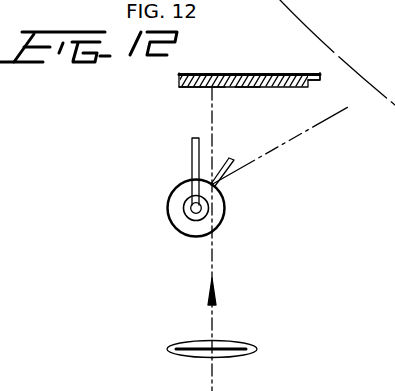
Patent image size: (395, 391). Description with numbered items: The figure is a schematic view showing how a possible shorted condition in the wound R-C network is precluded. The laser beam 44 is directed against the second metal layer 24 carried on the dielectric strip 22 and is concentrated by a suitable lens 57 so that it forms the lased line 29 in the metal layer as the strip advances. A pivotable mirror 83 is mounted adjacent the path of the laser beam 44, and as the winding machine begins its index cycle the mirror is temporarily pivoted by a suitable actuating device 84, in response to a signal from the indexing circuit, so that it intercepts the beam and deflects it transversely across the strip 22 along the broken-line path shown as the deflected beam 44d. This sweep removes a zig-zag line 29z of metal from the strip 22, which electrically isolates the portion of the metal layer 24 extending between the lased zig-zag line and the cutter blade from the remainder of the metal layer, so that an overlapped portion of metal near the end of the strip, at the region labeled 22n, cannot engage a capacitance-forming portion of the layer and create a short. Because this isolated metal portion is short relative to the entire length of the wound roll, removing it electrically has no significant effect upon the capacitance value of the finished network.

The dielectric strip 22 is at (220, 73).
The end portion of plate 22n is at (312, 81).
The second metal layer 24 is at (193, 88).
The lased line 29 is at (210, 88).
The zig-zag line 29z is at (248, 88).
The pivotable mirror 83 is at (192, 158).
The actuating device 84 is at (169, 206).
The laser beam 44 is at (213, 263).
The deflected laser beam 44d is at (277, 152).
The lens 57 is at (197, 342).